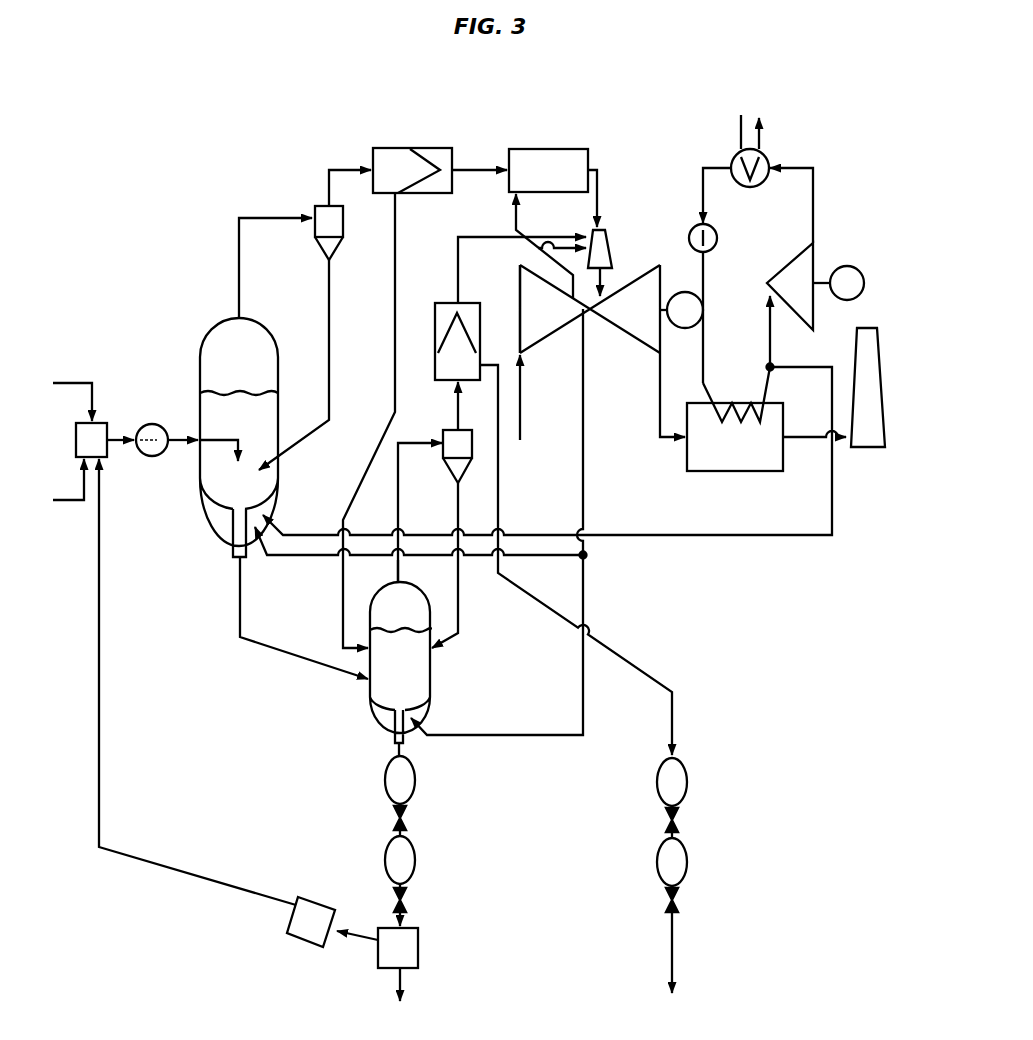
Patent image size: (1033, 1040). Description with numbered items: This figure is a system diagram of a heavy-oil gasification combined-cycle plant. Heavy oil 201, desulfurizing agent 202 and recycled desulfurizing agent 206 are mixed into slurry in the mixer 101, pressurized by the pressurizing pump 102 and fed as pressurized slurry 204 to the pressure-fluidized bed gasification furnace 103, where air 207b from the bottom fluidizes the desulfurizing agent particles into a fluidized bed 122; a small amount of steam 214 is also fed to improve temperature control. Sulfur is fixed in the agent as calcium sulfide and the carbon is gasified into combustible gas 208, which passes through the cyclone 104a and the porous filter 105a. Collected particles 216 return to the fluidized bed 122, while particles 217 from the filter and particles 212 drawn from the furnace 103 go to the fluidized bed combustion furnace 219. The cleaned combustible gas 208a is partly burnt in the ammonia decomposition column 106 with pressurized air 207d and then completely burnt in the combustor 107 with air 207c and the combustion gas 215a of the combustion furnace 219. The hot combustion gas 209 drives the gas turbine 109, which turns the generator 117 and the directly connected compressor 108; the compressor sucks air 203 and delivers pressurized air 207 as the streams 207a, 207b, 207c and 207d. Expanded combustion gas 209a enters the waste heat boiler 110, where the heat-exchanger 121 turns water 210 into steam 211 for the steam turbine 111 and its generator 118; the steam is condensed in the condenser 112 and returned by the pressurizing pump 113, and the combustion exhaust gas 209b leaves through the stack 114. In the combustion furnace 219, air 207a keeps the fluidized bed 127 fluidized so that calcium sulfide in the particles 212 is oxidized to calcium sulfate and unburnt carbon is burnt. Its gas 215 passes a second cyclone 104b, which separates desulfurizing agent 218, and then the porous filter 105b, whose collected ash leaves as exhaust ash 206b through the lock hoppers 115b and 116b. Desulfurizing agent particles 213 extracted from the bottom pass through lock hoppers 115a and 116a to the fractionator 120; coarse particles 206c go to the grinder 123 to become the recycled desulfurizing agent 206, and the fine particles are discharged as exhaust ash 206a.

The mixer 101 is at (105, 423).
The pressurizing pump 102 is at (146, 425).
The pressure-fluidized bed gasification furnace 103 is at (205, 342).
The cyclone 104a is at (320, 205).
The second cyclone separator 104b is at (442, 431).
The porous filter 105a is at (405, 147).
The porous filter 105b is at (442, 303).
The ammonia decomposition column 106 is at (563, 148).
The combustor 107 is at (605, 230).
The compressor 108 is at (519, 313).
The gas turbine 109 is at (612, 332).
The waste heat boiler 110 is at (740, 474).
The steam turbine 111 is at (815, 253).
The condenser 112 is at (770, 160).
The pressurizing pump 113 is at (718, 238).
The stack 114 is at (880, 369).
The lock hopper 115a is at (400, 780).
The lock hopper 115b is at (672, 782).
The lock hopper 116a is at (400, 860).
The lock hopper 116b is at (672, 862).
The generator 117 is at (670, 327).
The generator 118 is at (865, 283).
The fractionator 120 is at (419, 952).
The heat-exchanger 121 is at (760, 411).
The fluidized bed 122 is at (217, 455).
The grinder 123 is at (305, 947).
The fluidized bed 127 is at (392, 673).
The heavy oil 201 is at (85, 380).
The desulfurizing agent 202 is at (85, 503).
The air 203 is at (521, 416).
The slurry line 204 is at (111, 444).
The recycled desulfurizing agent 206 is at (227, 893).
The exhaust ash 206a is at (403, 977).
The exhaust ash 206b is at (672, 948).
The recycled desulfurizing agent 206c is at (365, 940).
The pressurized air 207 is at (584, 517).
The air 207a is at (498, 737).
The air 207b is at (313, 557).
The air 207c is at (538, 248).
The pressurized air 207d is at (515, 228).
The combustible gas 208 is at (239, 263).
The combustible gas 208a is at (482, 166).
The combustion gas 209 is at (602, 280).
The combustion gas 209a is at (665, 430).
The combustion exhaust gas 209b is at (802, 441).
The water 210 is at (704, 290).
The steam 211 is at (772, 350).
The particles of desulfurizing agent and unburnt component 212 is at (312, 665).
The desulfurizing agent particles 213 is at (395, 748).
The steam 214 is at (833, 527).
The vapor line 215 is at (399, 516).
The combustion gas 215a is at (540, 237).
The particles 216 is at (331, 299).
The particles 217 is at (396, 205).
The desulfurizing agent 218 is at (458, 625).
The fluidized bed combustion furnace 219 is at (418, 599).